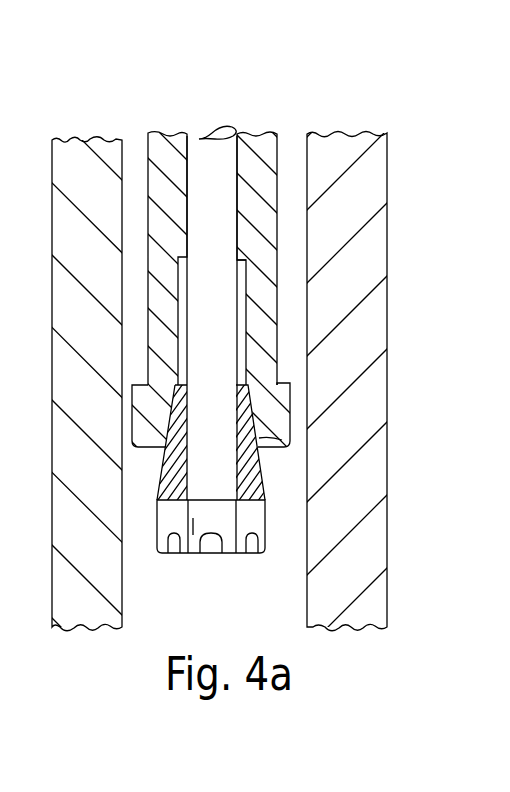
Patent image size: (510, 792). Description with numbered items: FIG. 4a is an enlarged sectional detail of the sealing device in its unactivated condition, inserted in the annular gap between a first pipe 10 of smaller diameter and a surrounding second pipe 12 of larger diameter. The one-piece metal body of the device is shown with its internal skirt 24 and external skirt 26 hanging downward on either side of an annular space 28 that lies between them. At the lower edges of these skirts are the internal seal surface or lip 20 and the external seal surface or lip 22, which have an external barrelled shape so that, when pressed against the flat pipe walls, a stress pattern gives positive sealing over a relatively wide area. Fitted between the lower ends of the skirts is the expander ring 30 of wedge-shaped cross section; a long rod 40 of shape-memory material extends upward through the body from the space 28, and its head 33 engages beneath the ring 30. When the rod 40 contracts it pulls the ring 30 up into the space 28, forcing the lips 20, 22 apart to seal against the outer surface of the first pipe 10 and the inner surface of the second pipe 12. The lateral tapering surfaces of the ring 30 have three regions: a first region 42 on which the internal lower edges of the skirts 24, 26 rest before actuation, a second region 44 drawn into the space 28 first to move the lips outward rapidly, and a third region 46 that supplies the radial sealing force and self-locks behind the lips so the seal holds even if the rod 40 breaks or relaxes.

The first pipe 10 is at (372, 238).
The second pipe 12 is at (79, 170).
The internal seal surface or lip 20 is at (295, 415).
The external seal surface or lip 22 is at (130, 415).
The internal skirt 24 is at (260, 363).
The external skirt 26 is at (160, 338).
The annular space 28 is at (243, 320).
The expander ring 30 is at (252, 478).
The head 33 is at (197, 556).
The rod 40 is at (218, 295).
The first region 42 is at (248, 392).
The second region 44 is at (290, 447).
The third region 46 is at (265, 468).